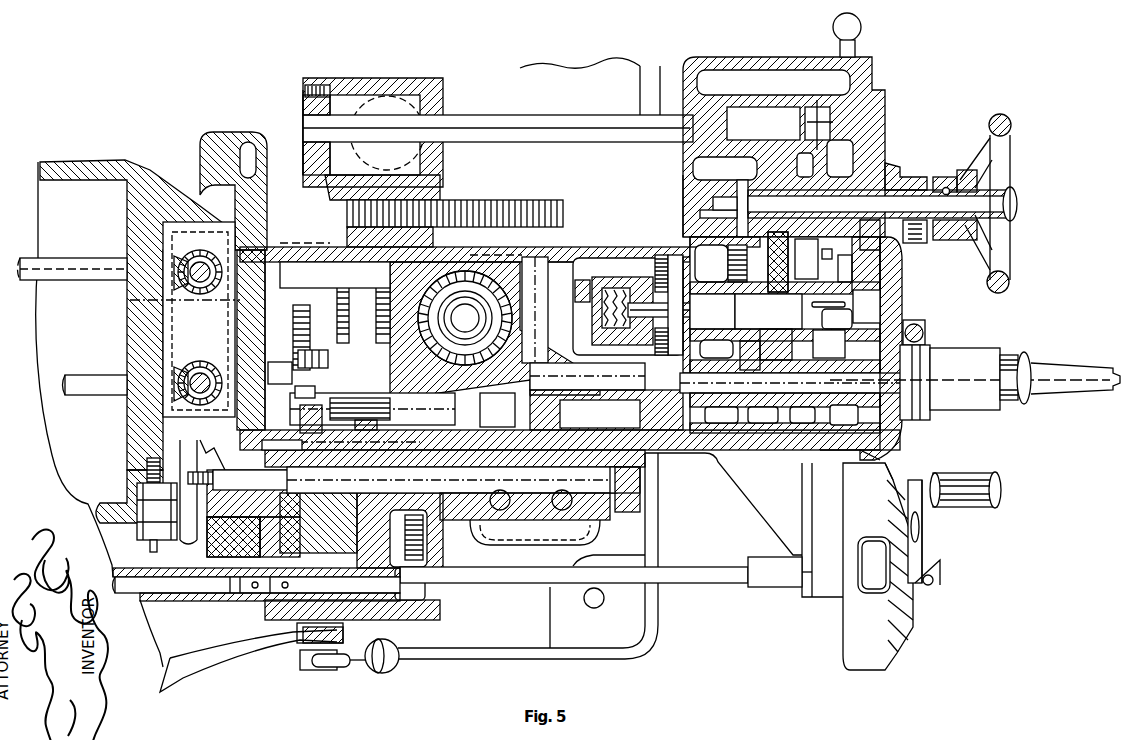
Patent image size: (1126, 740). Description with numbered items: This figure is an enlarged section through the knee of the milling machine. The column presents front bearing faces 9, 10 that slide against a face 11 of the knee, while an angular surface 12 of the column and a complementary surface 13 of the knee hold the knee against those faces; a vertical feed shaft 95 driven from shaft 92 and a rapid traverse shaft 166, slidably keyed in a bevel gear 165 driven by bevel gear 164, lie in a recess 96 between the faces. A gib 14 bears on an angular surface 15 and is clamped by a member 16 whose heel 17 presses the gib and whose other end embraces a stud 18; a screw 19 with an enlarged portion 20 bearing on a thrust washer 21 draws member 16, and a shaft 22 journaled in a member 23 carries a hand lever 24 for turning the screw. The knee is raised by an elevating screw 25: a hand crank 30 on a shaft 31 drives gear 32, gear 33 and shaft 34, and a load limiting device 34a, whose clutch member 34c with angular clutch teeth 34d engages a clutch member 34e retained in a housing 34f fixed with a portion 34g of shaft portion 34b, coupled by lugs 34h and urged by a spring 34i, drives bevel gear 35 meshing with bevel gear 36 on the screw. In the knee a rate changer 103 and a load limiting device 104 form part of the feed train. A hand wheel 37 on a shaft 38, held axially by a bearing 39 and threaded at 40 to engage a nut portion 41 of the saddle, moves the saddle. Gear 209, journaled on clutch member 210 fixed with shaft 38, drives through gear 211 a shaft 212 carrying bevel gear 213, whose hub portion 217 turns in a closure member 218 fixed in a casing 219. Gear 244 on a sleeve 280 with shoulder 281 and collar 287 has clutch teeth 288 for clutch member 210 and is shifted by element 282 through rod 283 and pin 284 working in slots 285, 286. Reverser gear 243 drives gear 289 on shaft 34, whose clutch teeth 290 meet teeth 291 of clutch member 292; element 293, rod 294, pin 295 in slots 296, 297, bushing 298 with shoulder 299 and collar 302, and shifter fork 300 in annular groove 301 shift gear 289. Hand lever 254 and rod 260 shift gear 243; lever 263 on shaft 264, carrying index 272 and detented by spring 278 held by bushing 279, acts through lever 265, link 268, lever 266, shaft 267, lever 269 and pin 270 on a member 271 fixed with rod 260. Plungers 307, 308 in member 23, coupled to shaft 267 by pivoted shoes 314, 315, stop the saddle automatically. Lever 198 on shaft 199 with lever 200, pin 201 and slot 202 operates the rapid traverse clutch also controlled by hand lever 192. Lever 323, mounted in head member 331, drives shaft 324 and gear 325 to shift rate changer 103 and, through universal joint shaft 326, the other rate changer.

The front bearing face 9 is at (240, 142).
The front bearing face 10 is at (246, 420).
The face 11 is at (235, 316).
The angular surface 12 is at (186, 165).
The complementary surface 13 is at (195, 198).
The gib 14 is at (212, 446).
The angular surface 15 is at (222, 470).
The clamping member 16 is at (170, 458).
The heel 17 is at (186, 485).
The stud 18 is at (241, 537).
The screw 19 is at (252, 470).
The enlarged portion 20 is at (346, 498).
The thrust washer 21 is at (282, 445).
The shaft 22 is at (447, 496).
The member 23 is at (602, 498).
The hand lever 24 is at (647, 496).
The elevating screw 25 is at (470, 325).
The hand crank 30 is at (1080, 390).
The shaft 31 is at (850, 453).
The gear 32 is at (844, 416).
The gear 33 is at (882, 266).
The shaft 34 is at (875, 297).
The load limiting device 34a is at (656, 352).
The shaft portion 34b is at (614, 346).
The clutch member 34c is at (630, 286).
The angular clutch teeth 34d is at (660, 258).
The clutch member 34e is at (606, 286).
The housing 34f is at (634, 277).
The shaft portion 34g is at (604, 327).
The interengaging lugs 34h is at (598, 260).
The spring 34i is at (627, 327).
The bevel gear 35 is at (495, 272).
The bevel gear 36 is at (495, 331).
The hand wheel 37 is at (1004, 116).
The shaft 38 is at (957, 177).
The bearing 39 is at (880, 150).
The threaded portion 40 is at (498, 200).
The nut portion 41 is at (445, 186).
The shaft 92 is at (112, 375).
The vertical shaft 95 is at (201, 366).
The recess 96 is at (189, 313).
The rate changer 103 is at (362, 285).
The load limiting device 104 is at (385, 419).
The bevel gear 164 is at (130, 258).
The bevel gear 165 is at (204, 252).
The shaft 166 is at (130, 298).
The hand lever 192 is at (926, 330).
The lever 198 is at (352, 668).
The shaft 199 is at (322, 438).
The lever 200 is at (296, 392).
The pin 201 is at (310, 386).
The slot 202 is at (298, 367).
The gear 209 is at (836, 265).
The clutch member 210 is at (810, 259).
The gear 211 is at (815, 82).
The shaft 212 is at (608, 116).
The bevel gear 213 is at (350, 92).
The hub portion 217 is at (303, 110).
The closure member 218 is at (303, 138).
The casing 219 is at (433, 88).
The gear 243 is at (758, 262).
The gear 244 is at (725, 164).
The hand lever 254 is at (862, 28).
The rod 260 is at (330, 243).
The hand lever 263 is at (200, 690).
The shaft 264 is at (300, 420).
The lever 265 is at (330, 428).
The lever 266 is at (555, 415).
The shaft 267 is at (574, 395).
The link 268 is at (505, 396).
The lever 269 is at (536, 257).
The pin 270 is at (560, 262).
The member 271 is at (510, 250).
The index 272 is at (297, 630).
The spring 278 is at (257, 586).
The bushing 279 is at (200, 565).
The sleeve 280 is at (742, 180).
The shoulder 281 is at (806, 200).
The manually operable element 282 is at (1016, 190).
The rod 283 is at (934, 236).
The pin 284 is at (711, 263).
The slot 285 is at (712, 210).
The slot 286 is at (714, 214).
The collar 287 is at (682, 188).
The clutch teeth 288 is at (805, 165).
The gear 289 is at (781, 334).
The clutch teeth 290 is at (821, 344).
The clutch teeth 291 is at (795, 303).
The clutch member 292 is at (832, 315).
The manually operable element 293 is at (1033, 402).
The rod 294 is at (968, 398).
The pin 295 is at (721, 417).
The slot 296 is at (745, 380).
The slot 297 is at (763, 417).
The bushing 298 is at (757, 450).
The shoulder 299 is at (807, 417).
The shifter fork 300 is at (742, 340).
The annular groove 301 is at (735, 301).
The collar 302 is at (716, 349).
The plunger 307 is at (482, 466).
The plunger 308 is at (554, 466).
The pivoted shoe 314 is at (482, 538).
The pivoted shoe 315 is at (587, 515).
The lever 323 is at (930, 522).
The shaft 324 is at (682, 586).
The gear 325 is at (440, 606).
The extensible universal joint shaft 326 is at (165, 602).
The head member 331 is at (836, 608).